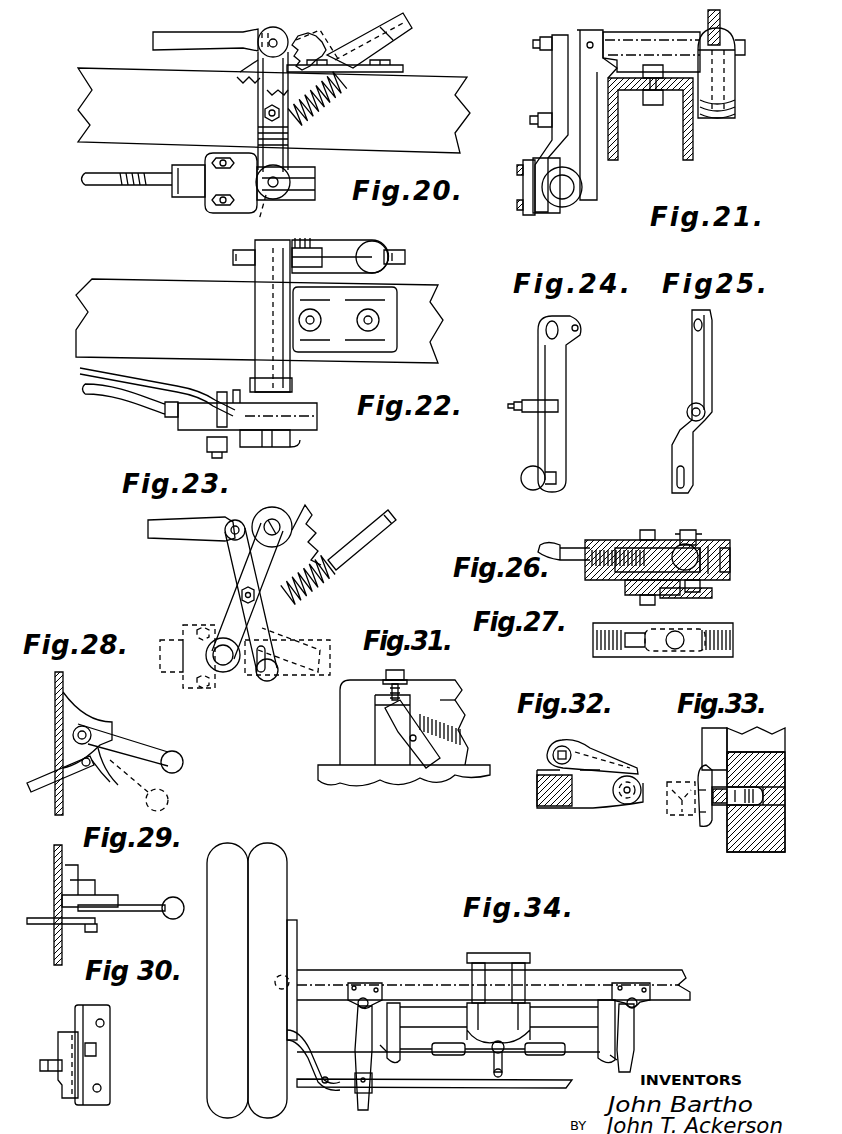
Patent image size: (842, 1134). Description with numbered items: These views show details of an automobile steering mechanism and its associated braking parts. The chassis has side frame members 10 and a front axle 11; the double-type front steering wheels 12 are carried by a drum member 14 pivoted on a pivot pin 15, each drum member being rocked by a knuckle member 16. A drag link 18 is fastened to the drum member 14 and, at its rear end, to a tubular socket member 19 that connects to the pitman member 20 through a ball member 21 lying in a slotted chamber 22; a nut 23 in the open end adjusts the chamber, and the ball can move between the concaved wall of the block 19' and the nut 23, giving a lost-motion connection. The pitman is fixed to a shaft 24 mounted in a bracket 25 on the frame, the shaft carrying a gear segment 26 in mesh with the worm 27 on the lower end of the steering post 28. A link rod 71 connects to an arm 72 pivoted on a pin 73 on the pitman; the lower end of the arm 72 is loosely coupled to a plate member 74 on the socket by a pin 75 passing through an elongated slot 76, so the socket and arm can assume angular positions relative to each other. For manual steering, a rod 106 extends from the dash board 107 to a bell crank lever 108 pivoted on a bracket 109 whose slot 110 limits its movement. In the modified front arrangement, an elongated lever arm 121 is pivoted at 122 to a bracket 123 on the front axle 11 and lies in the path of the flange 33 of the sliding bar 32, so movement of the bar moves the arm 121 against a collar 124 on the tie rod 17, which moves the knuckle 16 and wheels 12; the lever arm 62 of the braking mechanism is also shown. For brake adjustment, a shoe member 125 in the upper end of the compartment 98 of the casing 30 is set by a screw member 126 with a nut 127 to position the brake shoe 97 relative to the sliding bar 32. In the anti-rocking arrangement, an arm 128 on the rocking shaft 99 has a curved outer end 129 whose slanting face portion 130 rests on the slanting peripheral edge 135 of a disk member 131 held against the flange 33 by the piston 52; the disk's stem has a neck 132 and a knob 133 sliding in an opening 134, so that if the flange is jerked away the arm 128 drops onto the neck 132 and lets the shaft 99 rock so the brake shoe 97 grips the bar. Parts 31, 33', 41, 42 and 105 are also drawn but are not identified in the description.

In FIG. 20, the side frame members 10 is at (95, 103).
In FIG. 21, the side frame members 10 is at (620, 118).
In FIG. 22, the side frame members 10 is at (88, 322).
In FIG. 34, the front axle 11 is at (663, 969).
In FIG. 34, the front steering wheels 12 is at (272, 883).
In FIG. 34, the drum member 14 is at (298, 927).
In FIG. 34, the pivot pin 15 is at (279, 974).
In FIG. 34, the knuckle member 16 is at (310, 1062).
In FIG. 34, the tie rod 17 is at (463, 1083).
In FIG. 20, the drag link 18 is at (140, 186).
In FIG. 22, the drag link 18 is at (150, 415).
In FIG. 26, the drag link 18 is at (562, 548).
In FIG. 20, the tubular socket member 19 is at (298, 191).
In FIG. 22, the tubular socket member 19 is at (242, 413).
In FIG. 23, the tubular socket member 19 is at (289, 670).
In FIG. 26, the tubular socket member 19 is at (657, 543).
In FIG. 27, the tubular socket member 19 is at (666, 652).
In FIG. 26, the block 19' is at (653, 523).
In FIG. 20, the pitman member 20 is at (290, 139).
In FIG. 21, the pitman member 20 is at (590, 170).
In FIG. 22, the pitman member 20 is at (302, 403).
In FIG. 23, the pitman member 20 is at (272, 562).
In FIG. 24, the pitman member 20 is at (556, 436).
In FIG. 26, the pitman member 20 is at (694, 530).
In FIG. 23, the ball member 21 is at (226, 673).
In FIG. 24, the ball member 21 is at (536, 480).
In FIG. 26, the ball member 21 is at (690, 556).
In FIG. 26, the slotted chamber 22 is at (715, 546).
In FIG. 27, the slotted chamber 22 is at (676, 647).
In FIG. 26, the nut 23 is at (732, 563).
In FIG. 21, the shaft 24 is at (742, 50).
In FIG. 22, the shaft 24 is at (268, 245).
In FIG. 23, the shaft 24 is at (277, 520).
In FIG. 20, the bracket 25 is at (300, 45).
In FIG. 21, the bracket 25 is at (655, 32).
In FIG. 22, the bracket 25 is at (262, 324).
In FIG. 20, the gear segment 26 is at (322, 52).
In FIG. 22, the gear segment 26 is at (236, 259).
In FIG. 23, the gear segment 26 is at (308, 512).
In FIG. 20, the worm 27 is at (326, 120).
In FIG. 21, the worm 27 is at (732, 116).
In FIG. 22, the worm 27 is at (307, 246).
In FIG. 23, the worm 27 is at (332, 584).
In FIG. 20, the steering shaft 28 is at (402, 30).
In FIG. 21, the steering shaft 28 is at (722, 30).
In FIG. 22, the steering shaft 28 is at (406, 258).
In FIG. 23, the steering shaft 28 is at (377, 537).
In FIG. 31, the casing 30 is at (345, 694).
In FIG. 34, the casing 30 is at (490, 953).
In FIG. 34, the lug 31 is at (476, 968).
In FIG. 32, the sliding bar 32 is at (553, 809).
In FIG. 34, the sliding bar 32 is at (569, 1010).
In FIG. 32, the flange 33 is at (590, 803).
In FIG. 33, the flange 33 is at (756, 805).
In FIG. 34, the flange 33 is at (505, 1002).
In FIG. 34, the bracket plate extension 33' is at (499, 1050).
In FIG. 34, the slide block 41 is at (546, 1050).
In FIG. 34, the slide block 42 is at (450, 1044).
In FIG. 33, the piston 52 is at (672, 810).
In FIG. 34, the piston 52 is at (426, 1051).
In FIG. 34, the lever arm 62 is at (500, 1076).
In FIG. 20, the link rod 71 is at (193, 42).
In FIG. 21, the link rod 71 is at (548, 50).
In FIG. 22, the link rod 71 is at (185, 398).
In FIG. 23, the link rod 71 is at (178, 538).
In FIG. 20, the arm 72 is at (264, 101).
In FIG. 21, the arm 72 is at (552, 84).
In FIG. 23, the arm 72 is at (240, 572).
In FIG. 25, the arm 72 is at (714, 376).
In FIG. 20, the pin 73 is at (265, 116).
In FIG. 21, the pin 73 is at (538, 121).
In FIG. 24, the pin 73 is at (530, 412).
In FIG. 20, the plate member 74 is at (206, 160).
In FIG. 21, the plate member 74 is at (523, 178).
In FIG. 22, the plate member 74 is at (292, 447).
In FIG. 23, the plate member 74 is at (185, 689).
In FIG. 26, the plate member 74 is at (708, 598).
In FIG. 20, the pin 75 is at (266, 186).
In FIG. 21, the pin 75 is at (528, 200).
In FIG. 22, the pin 75 is at (262, 449).
In FIG. 23, the pin 75 is at (277, 650).
In FIG. 26, the pin 75 is at (702, 588).
In FIG. 21, the elongated slot 76 is at (546, 214).
In FIG. 23, the elongated slot 76 is at (322, 641).
In FIG. 25, the elongated slot 76 is at (677, 478).
In FIG. 31, the brake shoe 97 is at (402, 745).
In FIG. 31, the compartment 98 is at (375, 713).
In FIG. 32, the rocking shaft 99 is at (555, 753).
In FIG. 31, the pawl spring 105 is at (463, 728).
In FIG. 28, the rod 106 is at (45, 782).
In FIG. 29, the rod 106 is at (35, 925).
In FIG. 30, the rod 106 is at (48, 1073).
In FIG. 28, the dash board 107 is at (63, 690).
In FIG. 29, the dash board 107 is at (57, 890).
In FIG. 28, the bell crank lever 108 is at (178, 770).
In FIG. 29, the bell crank lever 108 is at (145, 903).
In FIG. 30, the bell crank lever 108 is at (56, 1037).
In FIG. 28, the bracket 109 is at (112, 731).
In FIG. 29, the bracket 109 is at (115, 909).
In FIG. 30, the bracket 109 is at (95, 1072).
In FIG. 28, the slot 110 is at (108, 766).
In FIG. 30, the slot 110 is at (58, 1053).
In FIG. 34, the elongated lever arm 121 is at (358, 1026).
In FIG. 34, the pivot 122 is at (364, 997).
In FIG. 34, the bracket 123 is at (352, 985).
In FIG. 34, the collar 124 is at (356, 1086).
In FIG. 31, the shoe member 125 is at (440, 698).
In FIG. 31, the screw member 126 is at (405, 673).
In FIG. 31, the nut 127 is at (383, 680).
In FIG. 32, the arm 128 is at (606, 748).
In FIG. 32, the curved outer end 129 is at (634, 775).
In FIG. 33, the curved outer end 129 is at (708, 744).
In FIG. 33, the slanting outer face portion 130 is at (699, 780).
In FIG. 33, the disk member 131 is at (700, 812).
In FIG. 33, the neck 132 is at (718, 806).
In FIG. 33, the knob 133 is at (735, 806).
In FIG. 33, the opening 134 is at (748, 812).
In FIG. 33, the slanting peripheral edge 135 is at (704, 826).